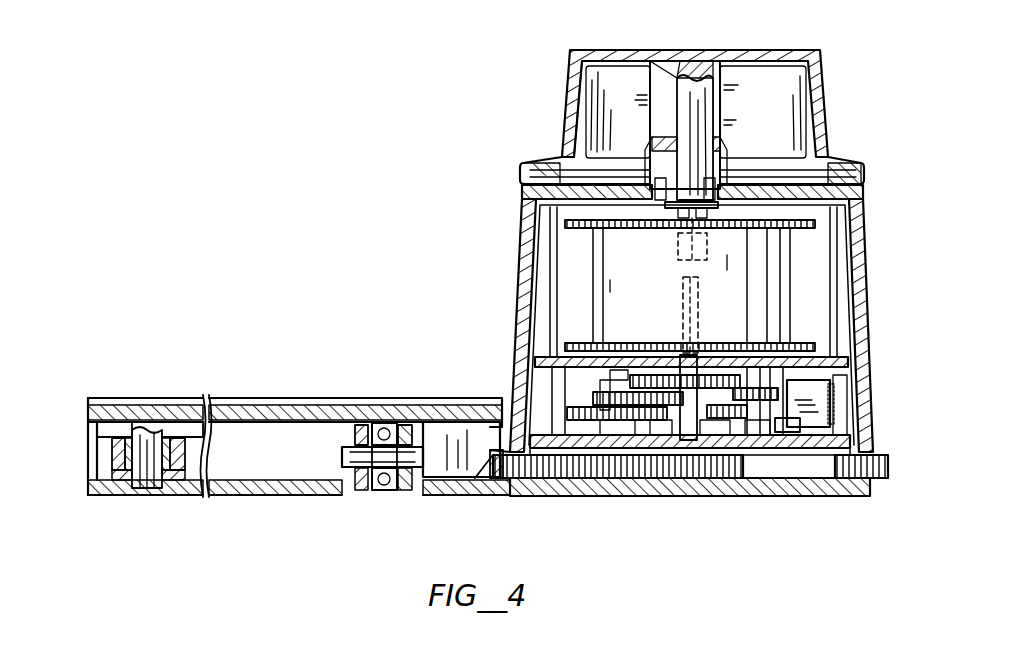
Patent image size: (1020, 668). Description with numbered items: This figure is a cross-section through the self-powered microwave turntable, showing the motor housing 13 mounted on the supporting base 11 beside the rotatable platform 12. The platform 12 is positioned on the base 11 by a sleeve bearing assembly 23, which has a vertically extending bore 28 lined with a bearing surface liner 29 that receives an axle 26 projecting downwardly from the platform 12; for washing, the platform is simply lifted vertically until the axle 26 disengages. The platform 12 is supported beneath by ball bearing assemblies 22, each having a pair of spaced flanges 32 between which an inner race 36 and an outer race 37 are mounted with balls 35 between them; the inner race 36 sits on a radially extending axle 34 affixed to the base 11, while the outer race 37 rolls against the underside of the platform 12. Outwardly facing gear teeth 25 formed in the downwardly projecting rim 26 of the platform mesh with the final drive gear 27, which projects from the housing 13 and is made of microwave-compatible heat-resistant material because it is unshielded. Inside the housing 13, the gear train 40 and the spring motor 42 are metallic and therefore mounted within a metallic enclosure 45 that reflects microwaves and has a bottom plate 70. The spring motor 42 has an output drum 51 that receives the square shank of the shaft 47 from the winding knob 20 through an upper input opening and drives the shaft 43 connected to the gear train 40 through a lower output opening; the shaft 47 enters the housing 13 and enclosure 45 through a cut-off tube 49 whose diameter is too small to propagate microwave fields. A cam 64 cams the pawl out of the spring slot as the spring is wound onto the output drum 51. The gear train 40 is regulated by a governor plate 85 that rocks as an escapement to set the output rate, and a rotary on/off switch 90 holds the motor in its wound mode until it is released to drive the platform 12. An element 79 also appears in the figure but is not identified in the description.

The supporting base 11 is at (741, 492).
The rotatable platform 12 is at (252, 400).
The motor housing 13 is at (525, 210).
The winding knob 20 is at (572, 110).
The ball bearing assembly 22 is at (375, 498).
The sleeve bearing assembly 23 is at (145, 497).
The gear teeth 25 is at (497, 472).
The axle 26 is at (145, 430).
The final drive gear 27 is at (660, 468).
The vertically extending bore 28 is at (180, 456).
The bearing surface liner 29 is at (122, 458).
The spaced flanges 32 is at (354, 437).
The radially extending axle 34 is at (343, 460).
The balls 35 is at (375, 424).
The inner ball bearing race 36 is at (400, 424).
The outer ball bearing race 37 is at (396, 492).
The gear train 40 is at (568, 392).
The spring motor 42 is at (566, 300).
The shaft 43 is at (683, 306).
The metallic enclosure 45 is at (535, 252).
The shaft 47 is at (678, 252).
The cut-off tube 49 is at (735, 160).
The output drum 51 is at (584, 330).
The cam 64 is at (843, 359).
The bottom plate 70 is at (800, 436).
The drive mount 79 is at (785, 430).
The governor plate 85 is at (833, 400).
The rotary on/off switch 90 is at (875, 482).